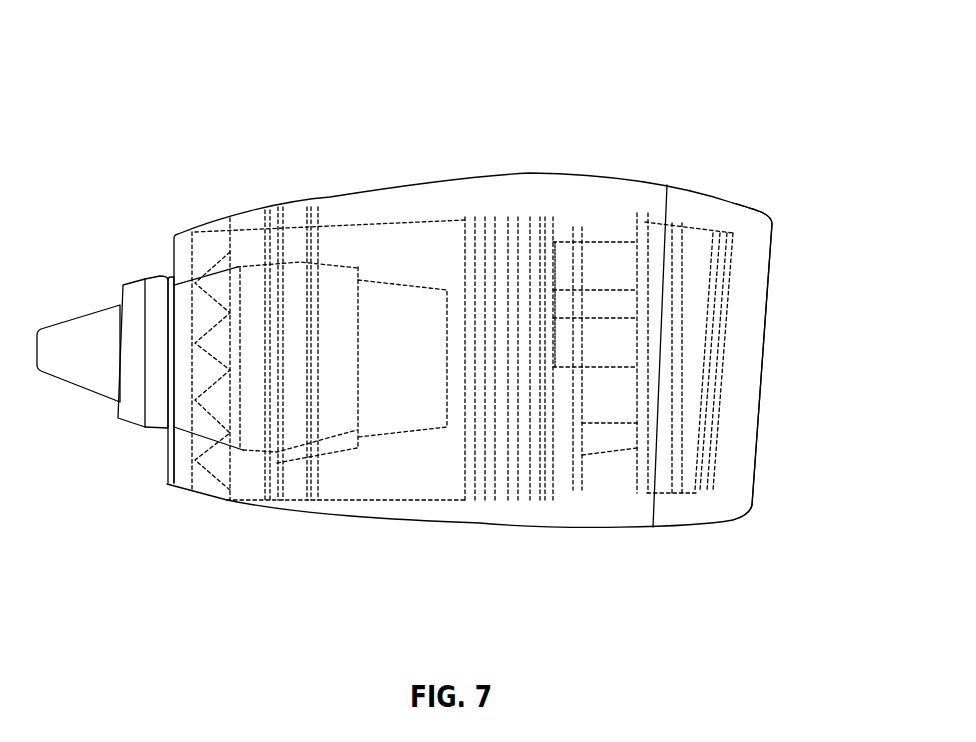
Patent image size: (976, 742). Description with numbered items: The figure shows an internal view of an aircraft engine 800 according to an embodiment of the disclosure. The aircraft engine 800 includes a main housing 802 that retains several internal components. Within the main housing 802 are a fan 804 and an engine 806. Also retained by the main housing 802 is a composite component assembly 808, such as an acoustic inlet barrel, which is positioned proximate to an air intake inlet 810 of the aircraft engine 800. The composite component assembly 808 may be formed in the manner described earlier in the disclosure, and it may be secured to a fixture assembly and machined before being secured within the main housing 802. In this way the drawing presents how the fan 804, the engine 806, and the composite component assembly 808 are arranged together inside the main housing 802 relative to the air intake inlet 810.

The aircraft engine 800 is at (465, 270).
The main housing 802 is at (352, 194).
The fan 804 is at (388, 247).
The engine 806 is at (510, 213).
The composite component assembly 808 is at (700, 250).
The air intake inlet 810 is at (767, 313).